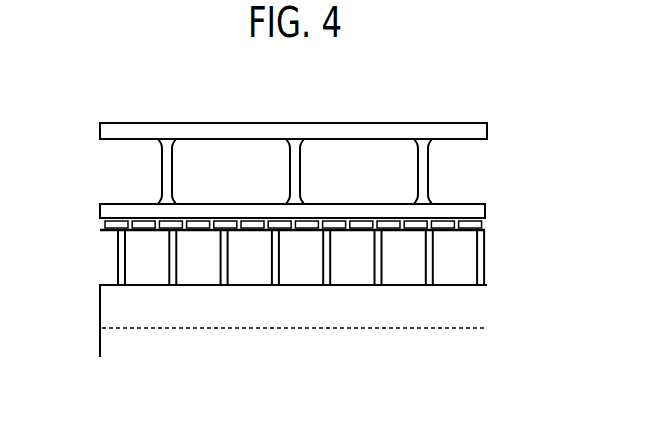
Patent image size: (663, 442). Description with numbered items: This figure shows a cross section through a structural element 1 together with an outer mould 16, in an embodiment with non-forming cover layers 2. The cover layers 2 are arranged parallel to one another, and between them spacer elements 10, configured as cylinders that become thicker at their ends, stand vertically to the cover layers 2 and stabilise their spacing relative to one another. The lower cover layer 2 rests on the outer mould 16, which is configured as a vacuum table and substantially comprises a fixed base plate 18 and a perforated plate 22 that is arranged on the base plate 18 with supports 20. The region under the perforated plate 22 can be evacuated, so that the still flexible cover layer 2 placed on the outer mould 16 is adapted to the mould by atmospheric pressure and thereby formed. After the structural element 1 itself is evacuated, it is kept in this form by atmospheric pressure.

The structural element 1 is at (496, 137).
The cover layers 2 is at (232, 123).
The spacer elements 10 is at (297, 127).
The outer mould 16 is at (506, 271).
The base plate 18 is at (293, 315).
The supports 20 is at (120, 258).
The perforated plate 22 is at (110, 213).